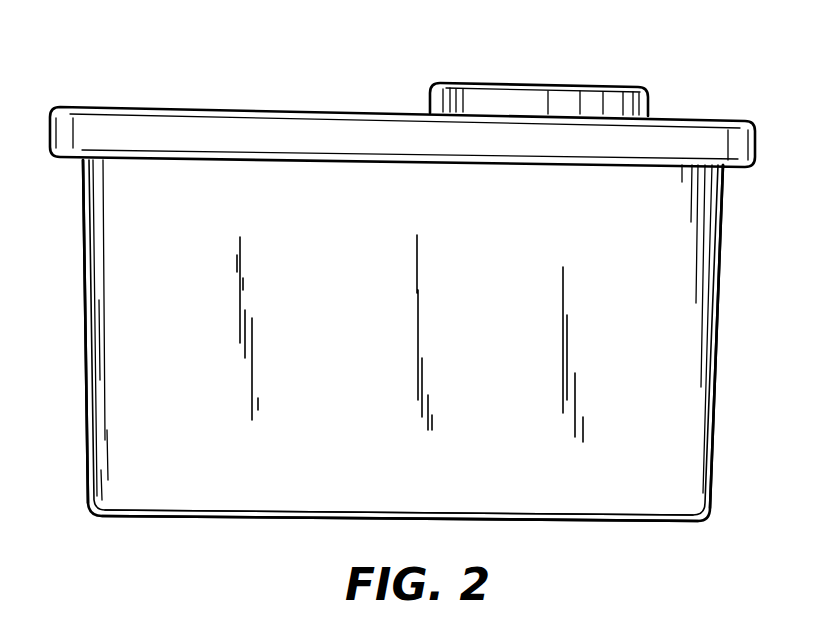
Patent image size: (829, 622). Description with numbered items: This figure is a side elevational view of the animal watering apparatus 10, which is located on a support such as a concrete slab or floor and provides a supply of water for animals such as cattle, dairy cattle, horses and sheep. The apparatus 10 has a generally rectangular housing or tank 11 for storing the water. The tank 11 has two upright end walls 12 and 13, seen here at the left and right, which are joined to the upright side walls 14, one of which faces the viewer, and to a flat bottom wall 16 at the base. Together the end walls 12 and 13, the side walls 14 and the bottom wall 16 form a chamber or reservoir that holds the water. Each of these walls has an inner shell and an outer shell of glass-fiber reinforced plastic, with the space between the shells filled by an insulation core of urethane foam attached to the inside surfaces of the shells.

The animal watering apparatus 10 is at (260, 88).
The housing or tank 11 is at (130, 234).
The end wall 12 is at (90, 343).
The end wall 13 is at (714, 332).
The side wall 14 is at (386, 435).
The bottom wall 16 is at (208, 518).